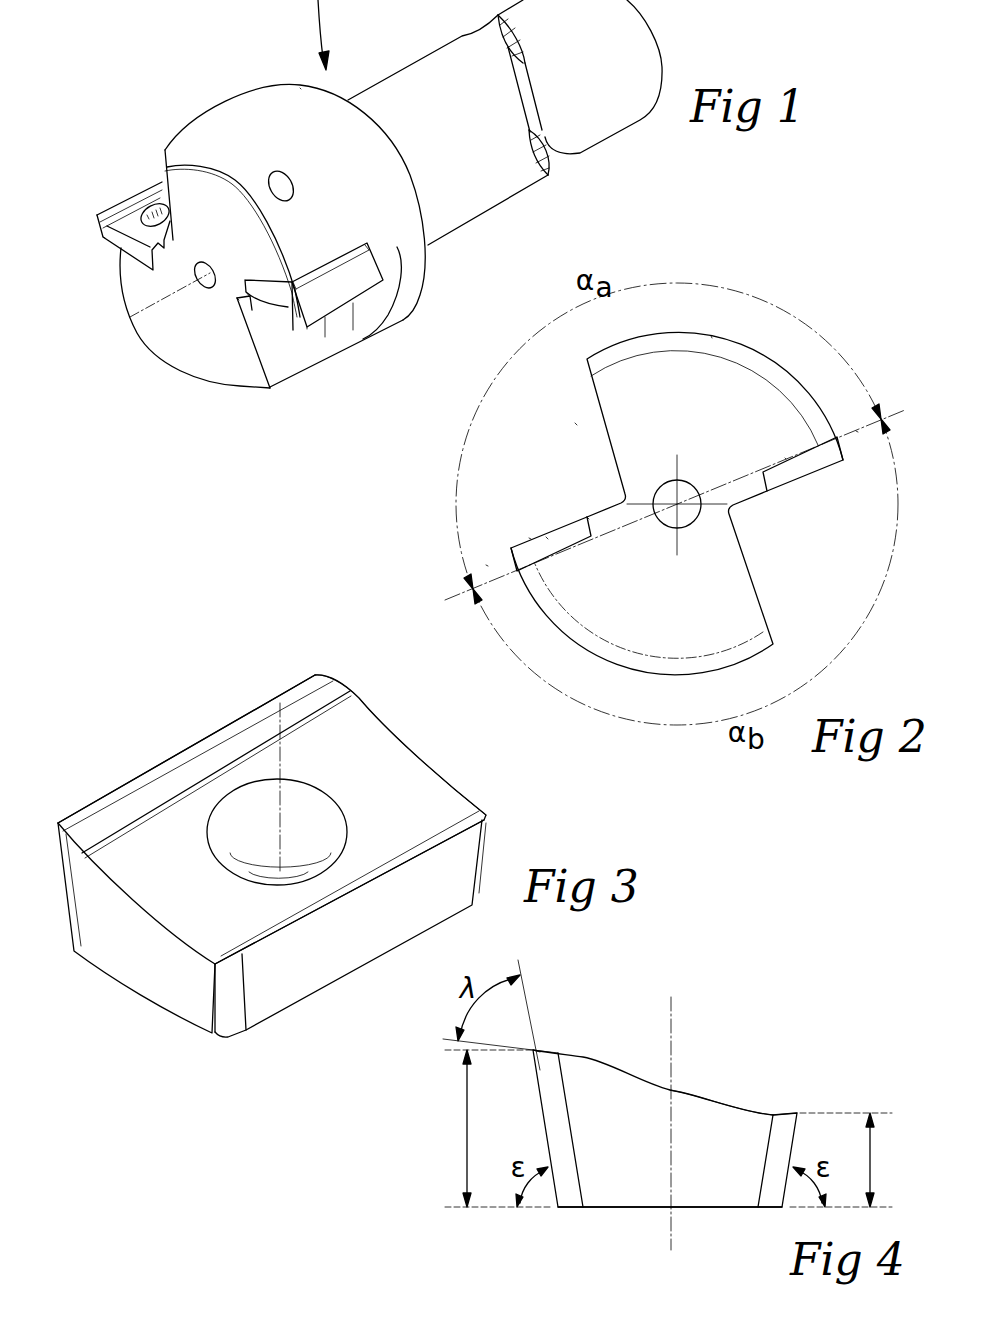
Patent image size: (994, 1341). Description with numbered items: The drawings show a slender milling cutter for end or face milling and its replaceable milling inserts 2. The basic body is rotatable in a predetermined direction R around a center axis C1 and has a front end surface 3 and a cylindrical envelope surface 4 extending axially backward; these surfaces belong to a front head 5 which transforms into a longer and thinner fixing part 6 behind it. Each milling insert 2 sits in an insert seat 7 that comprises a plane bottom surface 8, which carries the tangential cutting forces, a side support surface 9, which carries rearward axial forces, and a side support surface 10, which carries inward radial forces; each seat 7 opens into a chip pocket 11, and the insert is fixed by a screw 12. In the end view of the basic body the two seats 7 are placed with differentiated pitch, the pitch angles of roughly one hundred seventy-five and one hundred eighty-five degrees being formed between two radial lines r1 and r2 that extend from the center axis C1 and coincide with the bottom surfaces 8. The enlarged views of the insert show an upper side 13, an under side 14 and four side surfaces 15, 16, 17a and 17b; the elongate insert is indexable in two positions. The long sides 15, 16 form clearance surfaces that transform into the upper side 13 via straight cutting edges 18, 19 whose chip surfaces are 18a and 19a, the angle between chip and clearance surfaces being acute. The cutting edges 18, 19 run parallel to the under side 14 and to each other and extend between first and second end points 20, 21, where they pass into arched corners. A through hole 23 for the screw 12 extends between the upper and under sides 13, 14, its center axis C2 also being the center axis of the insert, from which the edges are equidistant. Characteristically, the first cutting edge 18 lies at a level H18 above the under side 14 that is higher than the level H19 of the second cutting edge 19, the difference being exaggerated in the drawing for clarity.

In FIG. 1, the milling insert 2 is at (84, 242).
In FIG. 1, the front end surface 3 is at (197, 348).
In FIG. 2, the front end surface 3 is at (657, 625).
In FIG. 1, the envelope surface 4 is at (308, 232).
In FIG. 2, the envelope surface 4 is at (712, 337).
In FIG. 1, the front head 5 is at (254, 108).
In FIG. 1, the fixing part 6 is at (433, 55).
In FIG. 2, the insert seat 7 is at (779, 447).
In FIG. 2, the bottom surface 8 is at (546, 538).
In FIG. 2, the side support surface 9 is at (529, 538).
In FIG. 2, the side support surface 10 is at (583, 521).
In FIG. 1, the chip pocket 11 is at (282, 356).
In FIG. 2, the chip pocket 11 is at (575, 424).
In FIG. 1, the screw 12 is at (148, 218).
In FIG. 3, the upper side 13 is at (272, 819).
In FIG. 4, the upper side 13 is at (710, 1093).
In FIG. 4, the under side 14 is at (712, 1209).
In FIG. 1, the side surface 15 is at (317, 301).
In FIG. 4, the side surface 15 is at (545, 1133).
In FIG. 3, the side surface 16 is at (431, 914).
In FIG. 4, the side surface 16 is at (792, 1142).
In FIG. 1, the side surface 17a is at (122, 252).
In FIG. 3, the side surface 17a is at (111, 962).
In FIG. 4, the side surface 17a is at (644, 1167).
In FIG. 1, the side surface 17b is at (263, 300).
In FIG. 3, the side surface 17b is at (445, 779).
In FIG. 1, the first cutting edge 18 is at (352, 304).
In FIG. 3, the first cutting edge 18 is at (173, 753).
In FIG. 4, the first cutting edge 18 is at (533, 1050).
In FIG. 3, the chip surface 18a is at (103, 809).
In FIG. 4, the chip surface 18a is at (552, 1049).
In FIG. 3, the second cutting edge 19 is at (364, 900).
In FIG. 4, the second cutting edge 19 is at (798, 1112).
In FIG. 3, the chip surface 19a is at (267, 942).
In FIG. 1, the first end point 20 is at (382, 286).
In FIG. 3, the first end point 20 is at (312, 674).
In FIG. 1, the second end point 21 is at (306, 328).
In FIG. 3, the second end point 21 is at (58, 820).
In FIG. 3, the through hole 23 is at (309, 832).
In FIG. 1, the center axis C1 is at (139, 317).
In FIG. 3, the center axis of the hole C2 is at (280, 770).
In FIG. 1, the direction of rotation R is at (317, 118).
In FIG. 2, the radial line r1 is at (486, 566).
In FIG. 2, the radial line r2 is at (856, 432).
In FIG. 4, the level of first cutting edge H18 is at (484, 1128).
In FIG. 4, the level of second cutting edge H19 is at (855, 1160).